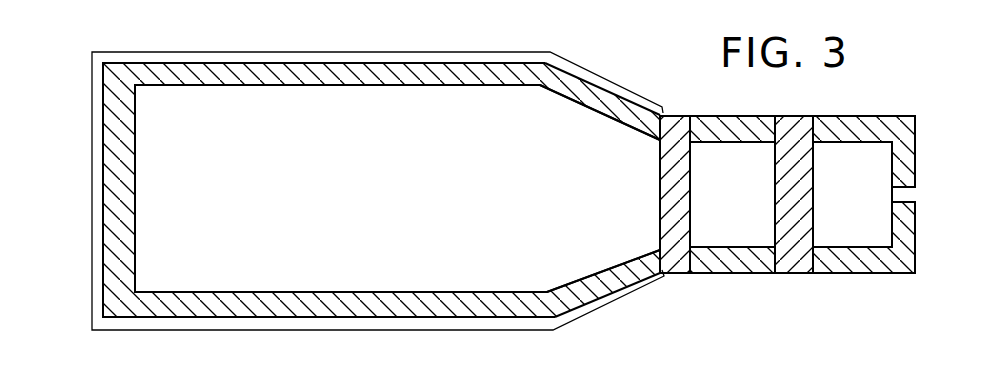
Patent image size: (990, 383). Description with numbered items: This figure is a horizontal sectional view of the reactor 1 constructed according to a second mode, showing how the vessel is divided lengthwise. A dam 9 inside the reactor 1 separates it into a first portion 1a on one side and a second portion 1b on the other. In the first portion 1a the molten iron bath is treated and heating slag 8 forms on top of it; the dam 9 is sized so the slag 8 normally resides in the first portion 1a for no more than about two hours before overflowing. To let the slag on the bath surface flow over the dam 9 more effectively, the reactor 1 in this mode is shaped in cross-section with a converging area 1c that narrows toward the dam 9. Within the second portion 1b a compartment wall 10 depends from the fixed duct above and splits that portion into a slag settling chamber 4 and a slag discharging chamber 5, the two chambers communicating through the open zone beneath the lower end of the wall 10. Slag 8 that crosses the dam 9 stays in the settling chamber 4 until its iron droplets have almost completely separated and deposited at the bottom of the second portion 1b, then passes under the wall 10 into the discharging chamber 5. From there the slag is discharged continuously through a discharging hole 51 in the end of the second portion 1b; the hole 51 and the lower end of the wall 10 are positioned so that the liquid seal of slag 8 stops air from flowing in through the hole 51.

The reactor 1 is at (104, 176).
The first portion of reactor 1a is at (361, 313).
The second portion of reactor 1b is at (860, 266).
The converging area 1c is at (595, 98).
The slag settling chamber 4 is at (746, 203).
The slag discharging chamber 5 is at (869, 203).
The heating slag 8 is at (372, 198).
The dam 9 is at (677, 273).
The wall 10 is at (795, 267).
The discharging hole 51 is at (903, 194).